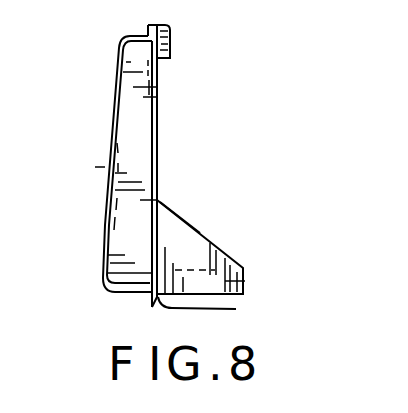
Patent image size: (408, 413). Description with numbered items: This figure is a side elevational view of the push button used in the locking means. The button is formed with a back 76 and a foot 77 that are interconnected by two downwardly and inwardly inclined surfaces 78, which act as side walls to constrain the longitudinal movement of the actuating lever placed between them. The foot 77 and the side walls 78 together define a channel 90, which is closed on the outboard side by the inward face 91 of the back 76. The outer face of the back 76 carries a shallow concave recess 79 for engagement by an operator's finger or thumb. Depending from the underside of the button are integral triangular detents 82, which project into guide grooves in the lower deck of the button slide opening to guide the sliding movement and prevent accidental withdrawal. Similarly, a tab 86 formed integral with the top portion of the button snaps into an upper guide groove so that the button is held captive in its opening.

The back 76 is at (130, 113).
The foot 77 is at (245, 281).
The inclined surfaces 78 is at (222, 259).
The concave recess 79 is at (95, 167).
The triangular detents 82 is at (216, 317).
The tab 86 is at (148, 26).
The channel 90 is at (204, 231).
The inward face 91 is at (158, 123).